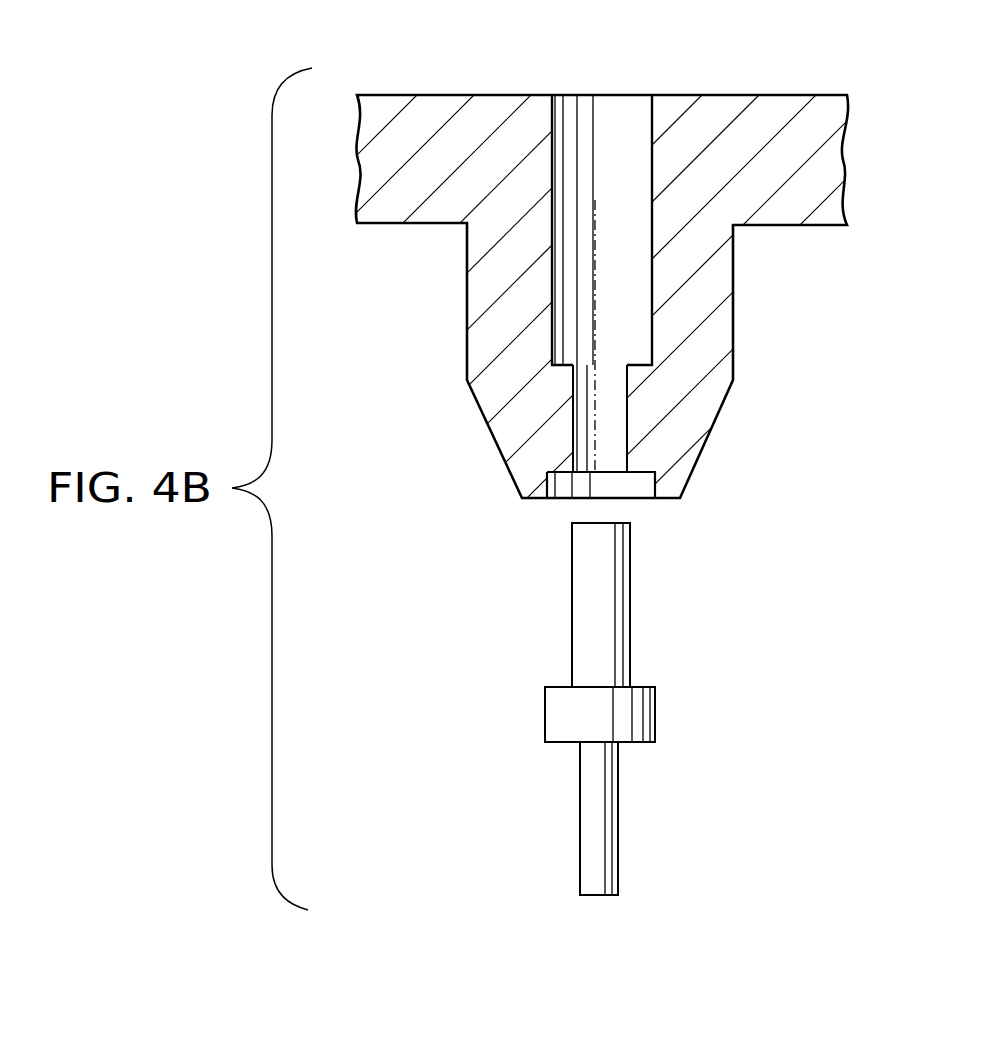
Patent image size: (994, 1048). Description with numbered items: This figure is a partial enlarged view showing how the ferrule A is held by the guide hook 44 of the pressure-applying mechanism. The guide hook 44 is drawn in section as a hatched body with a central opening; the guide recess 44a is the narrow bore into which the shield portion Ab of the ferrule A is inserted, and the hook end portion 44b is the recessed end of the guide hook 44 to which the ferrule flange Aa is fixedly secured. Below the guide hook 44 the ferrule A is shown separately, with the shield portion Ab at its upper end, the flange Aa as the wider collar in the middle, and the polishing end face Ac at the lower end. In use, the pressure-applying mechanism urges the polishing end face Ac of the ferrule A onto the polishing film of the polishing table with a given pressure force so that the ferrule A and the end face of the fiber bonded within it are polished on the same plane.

The guide hook 44 is at (748, 112).
The guide recess 44a is at (608, 400).
The hook end portion 44b is at (643, 486).
The ferrule A is at (616, 761).
The flange Aa is at (637, 716).
The shield portion Ab is at (596, 586).
The polishing end face Ac is at (597, 897).